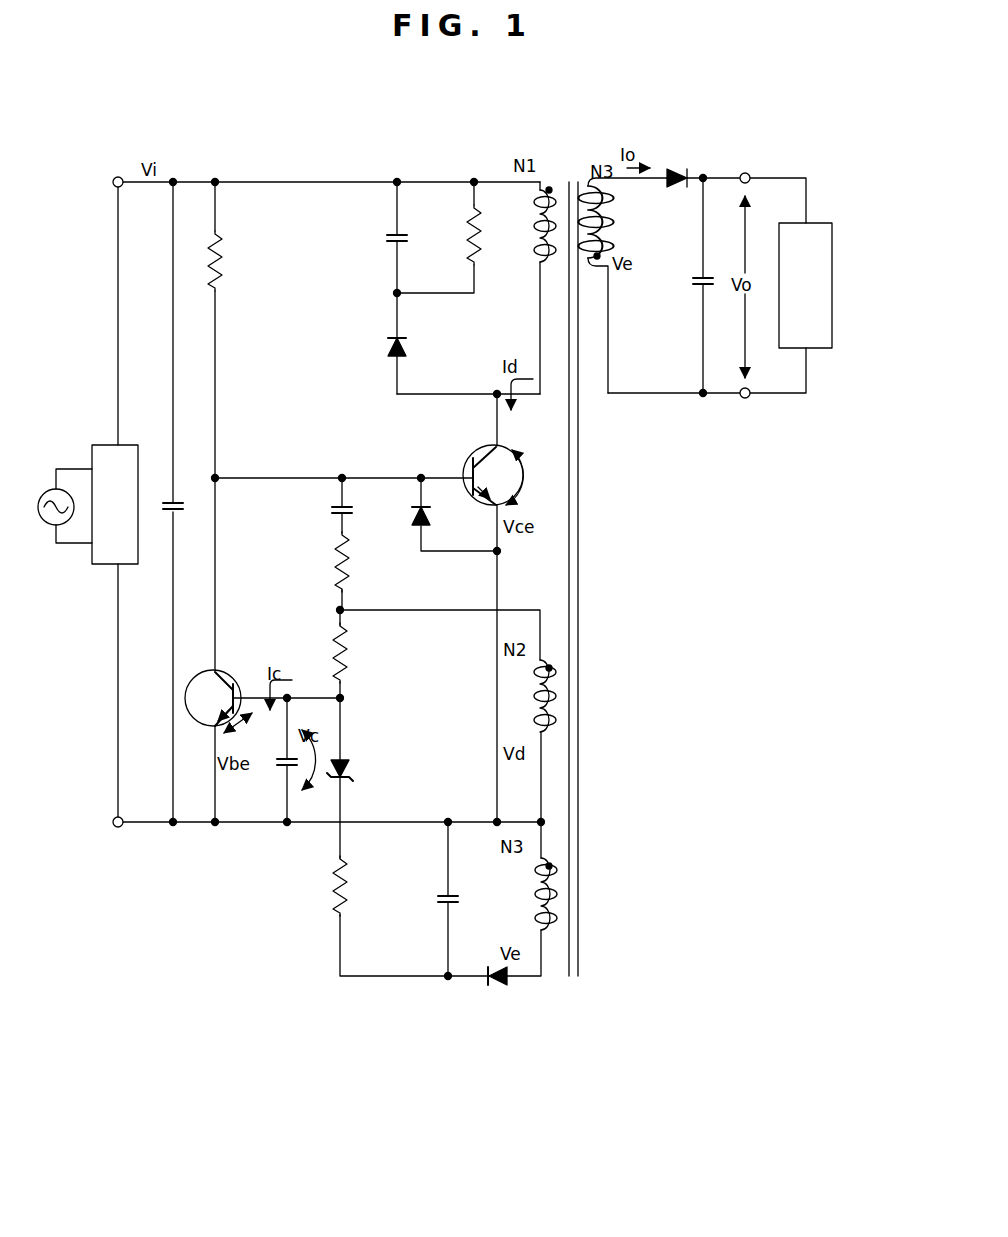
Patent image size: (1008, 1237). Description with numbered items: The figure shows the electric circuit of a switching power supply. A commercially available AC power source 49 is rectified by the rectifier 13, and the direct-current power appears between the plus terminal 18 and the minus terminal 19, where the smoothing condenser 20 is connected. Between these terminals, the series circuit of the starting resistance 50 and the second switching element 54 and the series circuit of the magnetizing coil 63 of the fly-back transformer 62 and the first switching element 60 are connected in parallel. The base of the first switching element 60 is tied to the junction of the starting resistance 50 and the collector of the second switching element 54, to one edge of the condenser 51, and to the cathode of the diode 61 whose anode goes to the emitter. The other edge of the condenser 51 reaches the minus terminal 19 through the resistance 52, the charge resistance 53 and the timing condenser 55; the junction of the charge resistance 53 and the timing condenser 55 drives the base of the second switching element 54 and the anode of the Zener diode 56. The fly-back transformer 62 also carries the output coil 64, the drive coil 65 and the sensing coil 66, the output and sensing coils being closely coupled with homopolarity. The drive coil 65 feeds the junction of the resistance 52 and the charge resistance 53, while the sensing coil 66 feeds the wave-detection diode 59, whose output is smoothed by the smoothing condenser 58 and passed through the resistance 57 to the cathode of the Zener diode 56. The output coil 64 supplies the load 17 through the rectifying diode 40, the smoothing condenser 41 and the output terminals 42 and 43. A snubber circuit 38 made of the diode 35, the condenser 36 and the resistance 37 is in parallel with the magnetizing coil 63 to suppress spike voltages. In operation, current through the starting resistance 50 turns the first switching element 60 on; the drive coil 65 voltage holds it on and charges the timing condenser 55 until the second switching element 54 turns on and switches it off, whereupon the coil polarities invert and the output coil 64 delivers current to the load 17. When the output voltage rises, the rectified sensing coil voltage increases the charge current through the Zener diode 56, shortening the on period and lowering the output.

The rectifier 13 is at (126, 444).
The load 17 is at (818, 222).
The plus terminal 18 is at (120, 177).
The minus terminal 19 is at (117, 832).
The smoothing condenser 20 is at (182, 501).
The diode 35 is at (410, 345).
The condenser 36 is at (386, 238).
The resistance 37 is at (480, 250).
The snubber circuit 38 is at (366, 322).
The rectifying diode 40 is at (681, 176).
The smoothing condenser 41 is at (692, 282).
The output terminal 42 is at (746, 173).
The output terminal 43 is at (745, 405).
The AC power source 49 is at (53, 488).
The starting resistance 50 is at (228, 255).
The condenser 51 is at (330, 510).
The resistance 52 is at (335, 568).
The charge resistance 53 is at (333, 655).
The second switching element 54 is at (228, 668).
The timing condenser 55 is at (280, 763).
The Zener diode 56 is at (350, 767).
The resistance 57 is at (330, 889).
The smoothing condenser 58 is at (432, 898).
The wave-detection diode 59 is at (502, 988).
The first switching element 60 is at (514, 442).
The diode 61 is at (412, 520).
The fly-back transformer 62 is at (577, 176).
The magnetizing coil 63 is at (540, 216).
The output coil 64 is at (611, 211).
The drive coil 65 is at (530, 710).
The sensing coil 66 is at (529, 906).